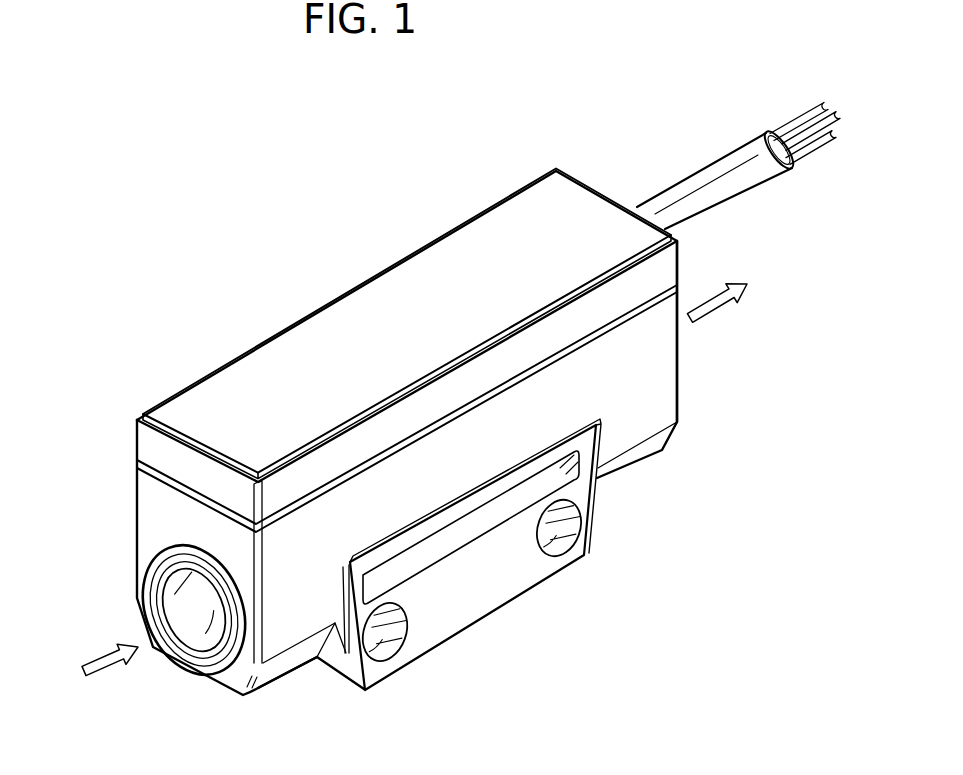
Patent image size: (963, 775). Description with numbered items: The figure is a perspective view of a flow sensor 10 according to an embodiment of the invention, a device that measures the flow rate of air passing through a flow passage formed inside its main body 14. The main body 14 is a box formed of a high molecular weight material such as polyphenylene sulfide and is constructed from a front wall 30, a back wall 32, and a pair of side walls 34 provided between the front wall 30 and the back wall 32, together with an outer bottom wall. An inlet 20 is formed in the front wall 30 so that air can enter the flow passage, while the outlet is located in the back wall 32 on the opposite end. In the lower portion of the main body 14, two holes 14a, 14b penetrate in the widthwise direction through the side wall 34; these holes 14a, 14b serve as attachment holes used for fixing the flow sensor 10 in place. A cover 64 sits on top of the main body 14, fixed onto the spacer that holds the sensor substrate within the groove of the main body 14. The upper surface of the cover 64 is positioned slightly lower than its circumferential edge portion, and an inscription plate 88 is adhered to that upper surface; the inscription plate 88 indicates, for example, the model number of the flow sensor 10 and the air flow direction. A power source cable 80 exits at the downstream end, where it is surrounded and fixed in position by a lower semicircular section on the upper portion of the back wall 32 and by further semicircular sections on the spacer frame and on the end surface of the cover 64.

The flow sensor 10 is at (185, 138).
The main body 14 is at (653, 402).
The hole 14a is at (393, 653).
The hole 14b is at (565, 550).
The inlet 20 is at (198, 630).
The front wall 30 is at (158, 505).
The back wall 32 is at (678, 347).
The side wall 34 is at (298, 607).
The cover 64 is at (157, 450).
The power source cable 80 is at (710, 178).
The inscription plate 88 is at (368, 302).